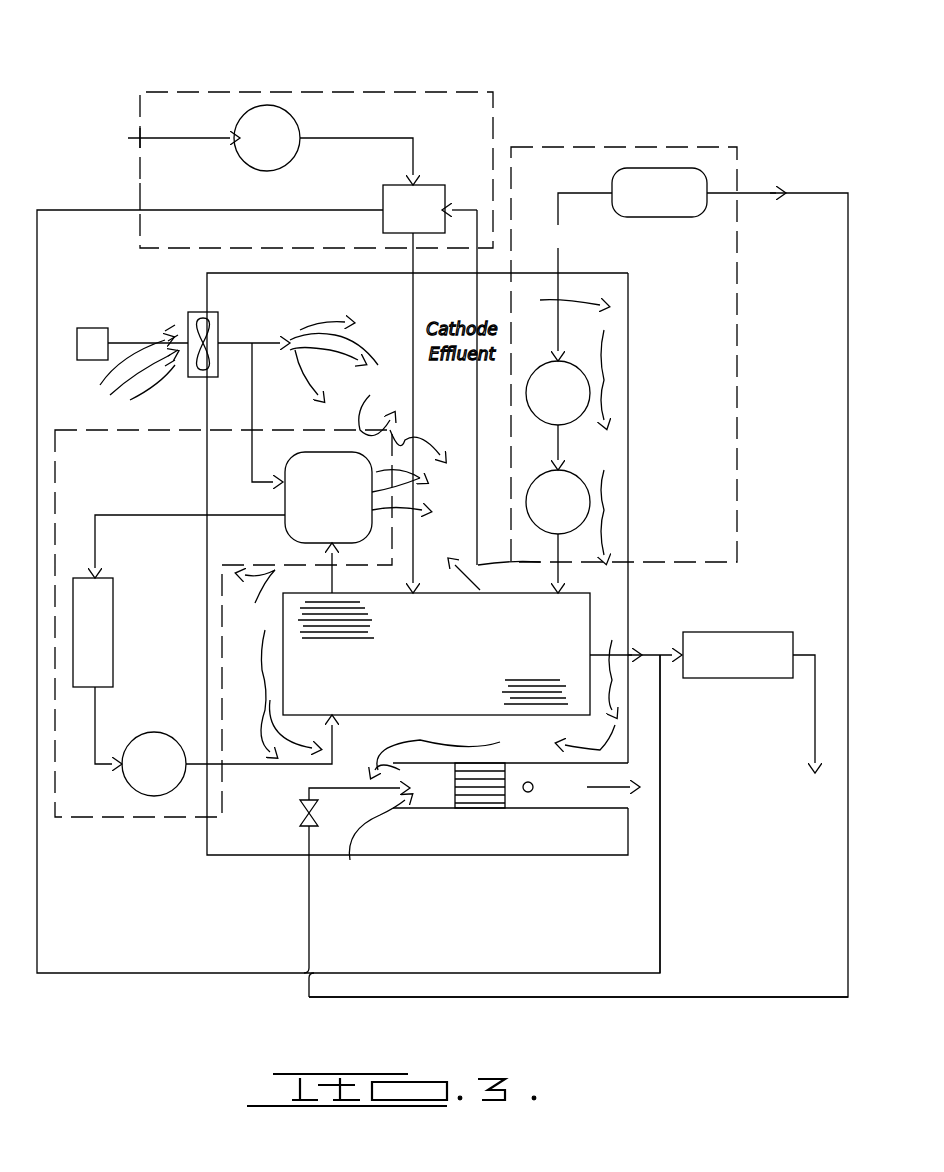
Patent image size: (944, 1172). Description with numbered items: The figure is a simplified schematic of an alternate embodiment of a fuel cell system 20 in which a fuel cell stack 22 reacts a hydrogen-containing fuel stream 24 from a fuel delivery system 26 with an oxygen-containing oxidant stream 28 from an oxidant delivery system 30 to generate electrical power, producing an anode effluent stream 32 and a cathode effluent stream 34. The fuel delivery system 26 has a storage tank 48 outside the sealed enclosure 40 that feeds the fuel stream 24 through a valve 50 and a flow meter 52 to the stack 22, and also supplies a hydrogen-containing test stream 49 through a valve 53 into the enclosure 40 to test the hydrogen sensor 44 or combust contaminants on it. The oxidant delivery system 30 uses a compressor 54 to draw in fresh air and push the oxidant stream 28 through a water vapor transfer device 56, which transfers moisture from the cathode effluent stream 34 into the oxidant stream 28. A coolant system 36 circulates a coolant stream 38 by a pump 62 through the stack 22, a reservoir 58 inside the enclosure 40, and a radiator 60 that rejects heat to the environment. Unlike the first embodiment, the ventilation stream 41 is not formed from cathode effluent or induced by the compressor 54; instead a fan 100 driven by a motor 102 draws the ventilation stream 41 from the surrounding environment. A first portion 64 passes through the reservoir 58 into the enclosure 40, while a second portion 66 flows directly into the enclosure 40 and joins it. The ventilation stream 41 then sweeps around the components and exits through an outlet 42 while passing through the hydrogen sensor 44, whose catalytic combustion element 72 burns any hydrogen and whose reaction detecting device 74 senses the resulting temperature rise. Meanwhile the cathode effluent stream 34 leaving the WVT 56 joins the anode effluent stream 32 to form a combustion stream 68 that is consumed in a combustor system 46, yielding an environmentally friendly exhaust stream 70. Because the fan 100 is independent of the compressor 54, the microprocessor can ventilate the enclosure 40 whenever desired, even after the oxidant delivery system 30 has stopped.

The fuel cell system 20 is at (760, 115).
The fuel cell stack 22 is at (400, 700).
The hydrogen-containing fuel stream 24 is at (568, 190).
The fuel delivery system 26 is at (622, 132).
The oxygen-containing oxidant stream 28 is at (345, 138).
The oxidant delivery system 30 is at (493, 110).
The anode effluent stream 32 is at (620, 650).
The cathode effluent stream 34 is at (283, 210).
The coolant system 36 is at (120, 820).
The coolant stream 38 is at (95, 512).
The enclosure 40 is at (630, 397).
The ventilation stream 41 is at (674, 777).
The outlet 42 is at (585, 808).
The hydrogen sensor 44 is at (535, 820).
The combustor system 46 is at (740, 632).
The storage tank 48 is at (655, 217).
The hydrogen-containing test stream 49 is at (636, 1000).
The valve 50 is at (578, 368).
The flow meter 52 is at (578, 482).
The valve 53 is at (300, 815).
The compressor 54 is at (250, 165).
The water vapor transfer device 56 is at (427, 200).
The reservoir 58 is at (300, 536).
The radiator 60 is at (113, 640).
The pump 62 is at (150, 735).
The first portion 64 is at (252, 422).
The second portion 66 is at (268, 340).
The combustion stream 68 is at (665, 680).
The exhaust stream 70 is at (815, 650).
The catalytic combustion element 72 is at (462, 790).
The reaction detecting device 74 is at (533, 790).
The fan 100 is at (188, 318).
The motor 102 is at (88, 328).